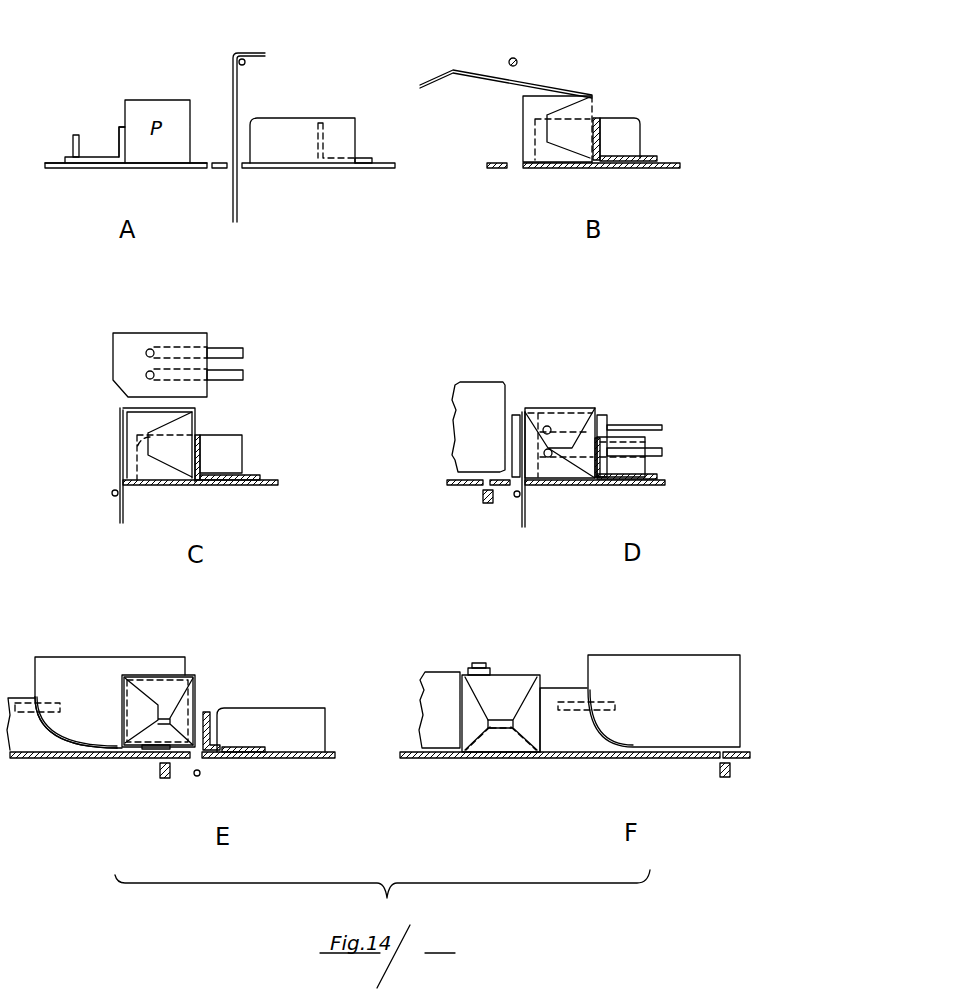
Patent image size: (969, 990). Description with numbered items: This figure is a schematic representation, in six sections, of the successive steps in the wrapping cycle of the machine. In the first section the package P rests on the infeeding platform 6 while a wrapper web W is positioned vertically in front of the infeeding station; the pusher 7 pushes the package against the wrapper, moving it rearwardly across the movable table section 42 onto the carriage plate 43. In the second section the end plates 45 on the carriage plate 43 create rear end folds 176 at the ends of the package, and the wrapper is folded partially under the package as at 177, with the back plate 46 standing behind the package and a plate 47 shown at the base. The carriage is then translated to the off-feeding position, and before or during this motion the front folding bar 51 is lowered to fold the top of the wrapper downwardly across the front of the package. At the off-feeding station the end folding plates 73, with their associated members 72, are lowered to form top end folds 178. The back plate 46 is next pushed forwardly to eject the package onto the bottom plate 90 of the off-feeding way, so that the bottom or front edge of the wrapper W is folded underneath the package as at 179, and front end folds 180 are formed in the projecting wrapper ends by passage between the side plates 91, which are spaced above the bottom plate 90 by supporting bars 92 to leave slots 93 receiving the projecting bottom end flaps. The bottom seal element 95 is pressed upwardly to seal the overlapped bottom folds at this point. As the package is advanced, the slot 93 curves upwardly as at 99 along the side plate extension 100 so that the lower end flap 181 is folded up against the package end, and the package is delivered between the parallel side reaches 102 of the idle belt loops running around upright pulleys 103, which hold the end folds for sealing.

The infeeding platform 6 is at (127, 167).
The pusher 7 is at (120, 140).
The movable table section 42 is at (220, 170).
The carriage plate 43 is at (345, 170).
The end plates 45 is at (297, 127).
The back plate 46 is at (325, 130).
The plate 47 is at (365, 158).
The front folding bar 51 is at (244, 65).
The plug pins 72 is at (228, 353).
The end folding plates 73 is at (167, 338).
The bottom plate 90 is at (455, 487).
The side plates 91 is at (472, 392).
The supporting bars 92 is at (23, 703).
The slots 93 is at (97, 753).
The bottom seal element 95 is at (485, 497).
The upward curve of slot 99 is at (70, 738).
The side plate extension 100 is at (23, 737).
The side reaches of belt loops 102 is at (435, 687).
The upright pulleys 103 is at (477, 663).
The rear end folds 176 is at (565, 143).
The partial under fold of wrapper 177 is at (540, 167).
The top end folds 178 is at (550, 423).
The bottom fold of wrapper 179 is at (148, 752).
The front end folds 180 is at (140, 700).
The lower end flap 181 is at (505, 738).
The wrapper web W is at (233, 83).